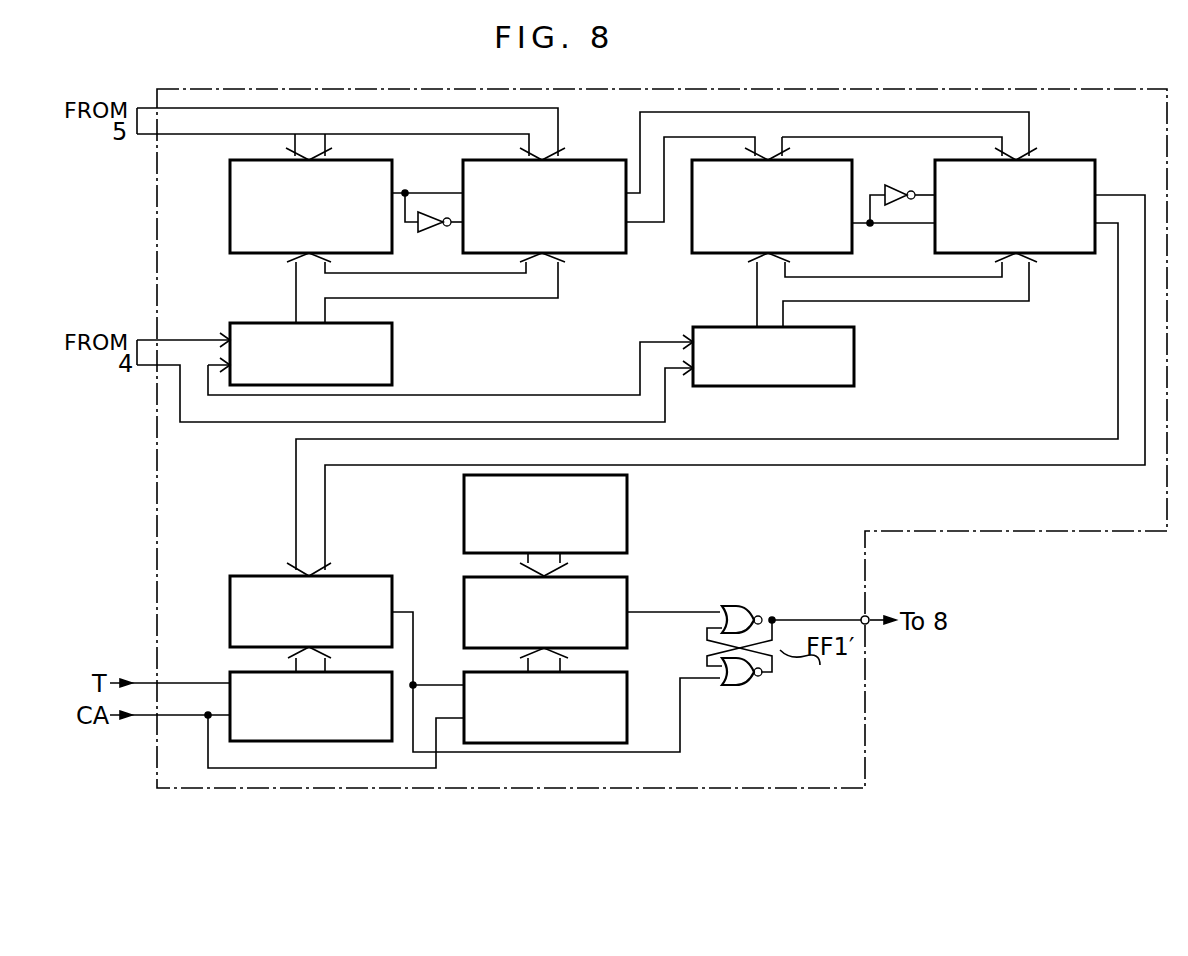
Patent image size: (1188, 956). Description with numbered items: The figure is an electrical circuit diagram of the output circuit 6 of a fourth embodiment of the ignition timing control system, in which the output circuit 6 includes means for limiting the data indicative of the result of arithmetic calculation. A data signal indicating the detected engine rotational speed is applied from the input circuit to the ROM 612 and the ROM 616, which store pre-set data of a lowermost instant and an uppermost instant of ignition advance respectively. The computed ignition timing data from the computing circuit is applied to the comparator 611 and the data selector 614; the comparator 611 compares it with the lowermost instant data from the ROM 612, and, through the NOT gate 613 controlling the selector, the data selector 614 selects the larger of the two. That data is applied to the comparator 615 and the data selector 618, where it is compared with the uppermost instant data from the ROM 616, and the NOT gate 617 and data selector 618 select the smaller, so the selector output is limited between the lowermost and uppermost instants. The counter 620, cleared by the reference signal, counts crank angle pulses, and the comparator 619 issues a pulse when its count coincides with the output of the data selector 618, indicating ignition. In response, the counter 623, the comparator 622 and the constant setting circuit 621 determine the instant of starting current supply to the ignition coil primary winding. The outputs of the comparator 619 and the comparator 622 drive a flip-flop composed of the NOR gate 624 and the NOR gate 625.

The output circuit 6 is at (865, 702).
The data comparator 611 is at (274, 256).
The ROM 612 is at (396, 354).
The NOT gate 613 is at (441, 234).
The data selector 614 is at (577, 255).
The data comparator 615 is at (735, 257).
The ROM 616 is at (857, 364).
The NOT gate 617 is at (908, 188).
The data selector 618 is at (1040, 255).
The data comparator 619 is at (347, 575).
The counter 620 is at (245, 670).
The constant setting circuit 621 is at (630, 515).
The data comparator 622 is at (630, 597).
The counter 623 is at (630, 700).
The NOR gate 624 is at (760, 592).
The NOR gate 625 is at (745, 690).